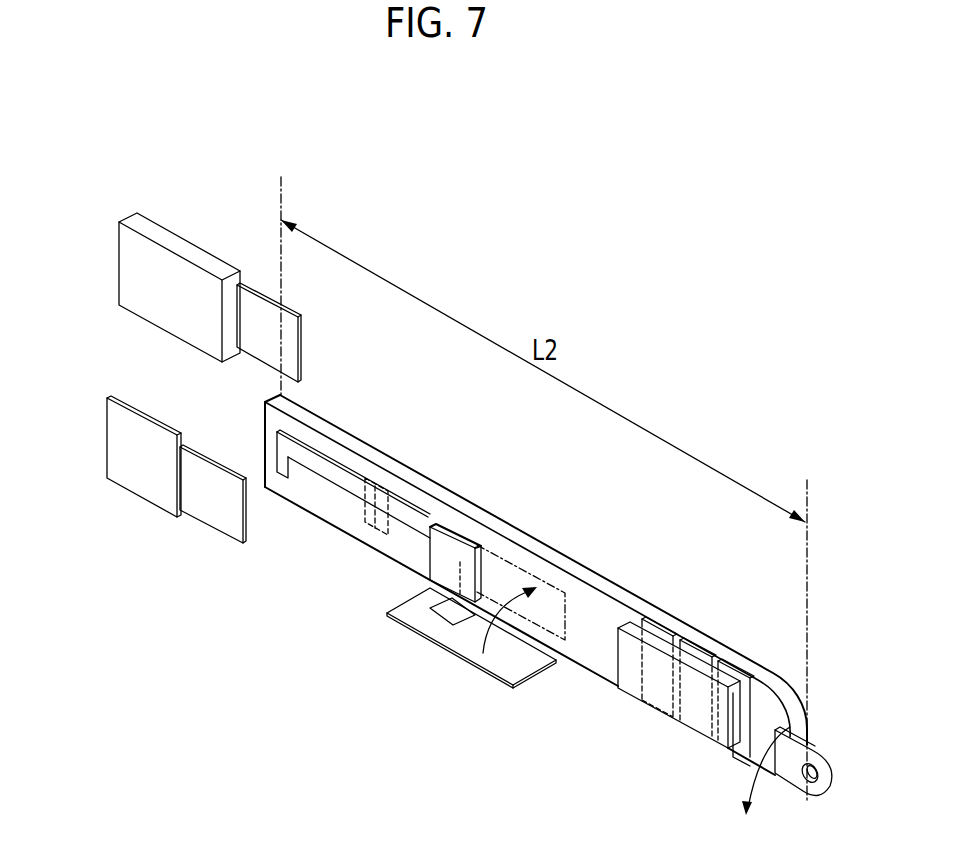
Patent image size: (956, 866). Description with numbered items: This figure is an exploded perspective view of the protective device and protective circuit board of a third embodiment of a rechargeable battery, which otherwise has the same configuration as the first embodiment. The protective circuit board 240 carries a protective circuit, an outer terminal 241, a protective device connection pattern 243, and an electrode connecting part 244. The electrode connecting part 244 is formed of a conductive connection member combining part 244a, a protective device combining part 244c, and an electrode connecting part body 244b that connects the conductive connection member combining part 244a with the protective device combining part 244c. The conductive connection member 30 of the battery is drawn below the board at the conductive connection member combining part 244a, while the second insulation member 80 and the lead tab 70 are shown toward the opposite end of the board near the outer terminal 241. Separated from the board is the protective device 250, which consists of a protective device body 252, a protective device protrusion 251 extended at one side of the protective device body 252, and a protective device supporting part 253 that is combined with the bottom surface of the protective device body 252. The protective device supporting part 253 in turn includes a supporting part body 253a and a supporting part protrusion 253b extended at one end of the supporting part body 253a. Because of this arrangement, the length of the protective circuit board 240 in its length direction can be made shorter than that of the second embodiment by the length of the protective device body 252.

The protective circuit board 240 is at (536, 559).
The outer terminal 241 is at (733, 675).
The protective device connection pattern 243 is at (362, 523).
The electrode connecting part 244 is at (379, 472).
The conductive connection member combining part 244a is at (454, 510).
The electrode connecting part body 244b is at (342, 478).
The protective device combining part 244c is at (286, 450).
The protective device 250 is at (174, 462).
The protective device protrusion 251 is at (258, 352).
The protective device body 252 is at (180, 323).
The protective device supporting part 253 is at (179, 570).
The supporting part body 253a is at (141, 490).
The supporting part protrusion 253b is at (217, 523).
The conductive connection member 30 is at (471, 655).
The second insulation member 80 is at (633, 688).
The lead tab 70 is at (793, 781).